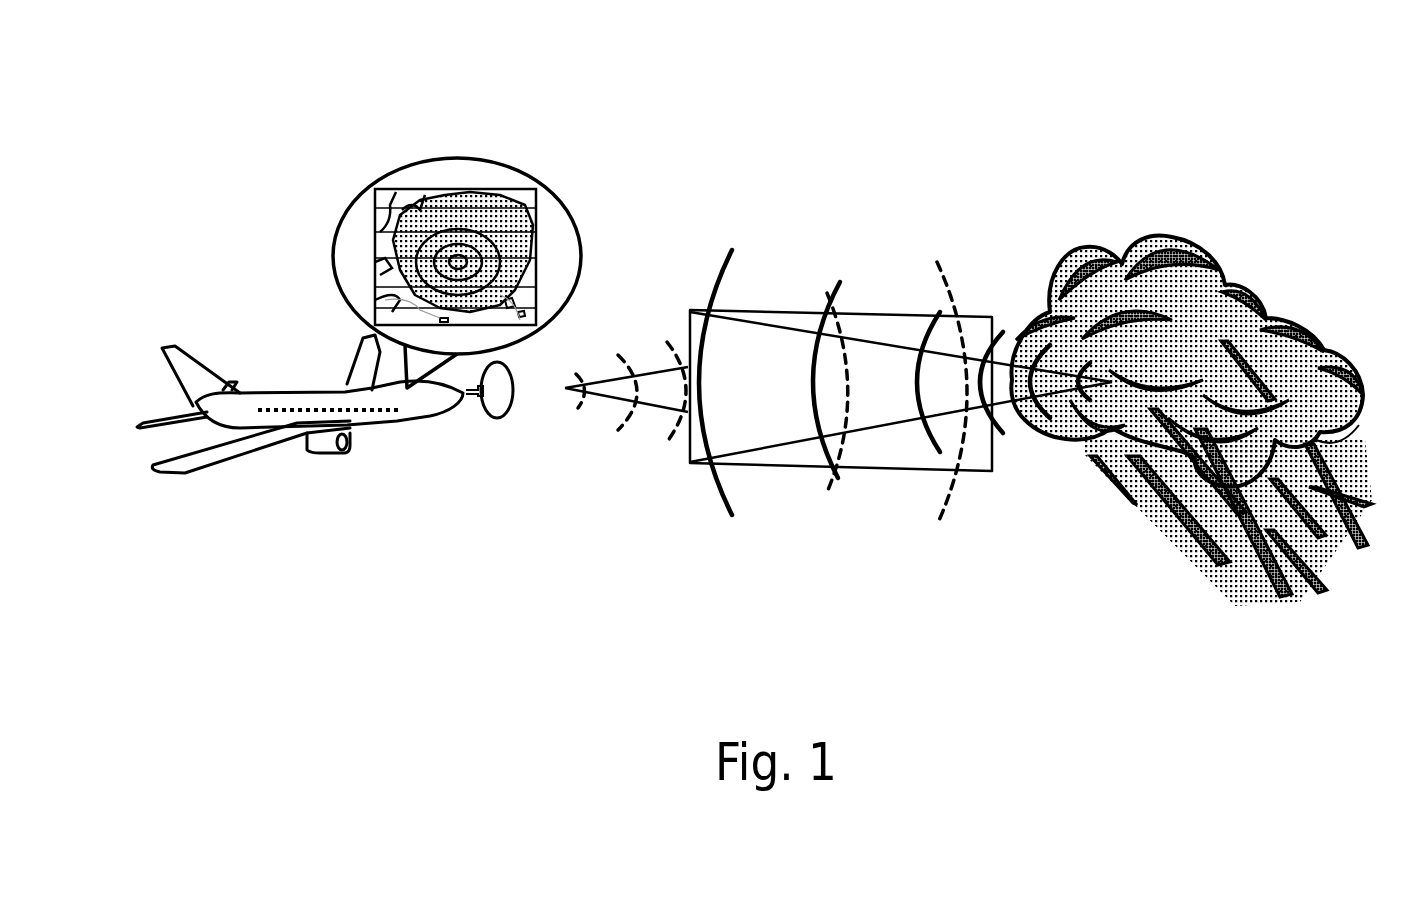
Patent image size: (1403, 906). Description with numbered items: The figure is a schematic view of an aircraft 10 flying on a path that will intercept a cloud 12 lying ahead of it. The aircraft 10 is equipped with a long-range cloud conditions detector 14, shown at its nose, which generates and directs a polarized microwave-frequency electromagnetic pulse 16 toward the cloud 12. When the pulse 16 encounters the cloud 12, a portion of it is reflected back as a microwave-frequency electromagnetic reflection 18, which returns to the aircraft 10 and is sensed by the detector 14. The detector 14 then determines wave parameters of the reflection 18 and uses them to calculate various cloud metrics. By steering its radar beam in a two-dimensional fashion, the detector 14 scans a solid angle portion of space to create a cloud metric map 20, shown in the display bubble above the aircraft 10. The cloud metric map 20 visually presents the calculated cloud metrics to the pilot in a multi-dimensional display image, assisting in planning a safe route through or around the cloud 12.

The aircraft 10 is at (303, 390).
The cloud 12 is at (1146, 286).
The long-range cloud conditions detector 14 is at (492, 427).
The polarized microwave-frequency electromagnetic pulse 16 is at (913, 437).
The microwave-frequency electromagnetic reflection 18 is at (863, 372).
The cloud metric map 20 is at (457, 148).